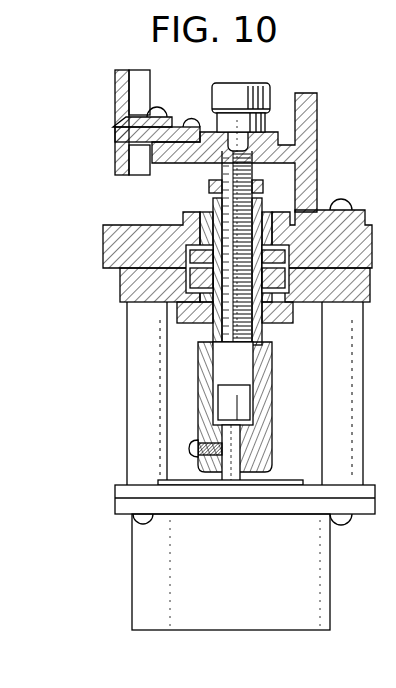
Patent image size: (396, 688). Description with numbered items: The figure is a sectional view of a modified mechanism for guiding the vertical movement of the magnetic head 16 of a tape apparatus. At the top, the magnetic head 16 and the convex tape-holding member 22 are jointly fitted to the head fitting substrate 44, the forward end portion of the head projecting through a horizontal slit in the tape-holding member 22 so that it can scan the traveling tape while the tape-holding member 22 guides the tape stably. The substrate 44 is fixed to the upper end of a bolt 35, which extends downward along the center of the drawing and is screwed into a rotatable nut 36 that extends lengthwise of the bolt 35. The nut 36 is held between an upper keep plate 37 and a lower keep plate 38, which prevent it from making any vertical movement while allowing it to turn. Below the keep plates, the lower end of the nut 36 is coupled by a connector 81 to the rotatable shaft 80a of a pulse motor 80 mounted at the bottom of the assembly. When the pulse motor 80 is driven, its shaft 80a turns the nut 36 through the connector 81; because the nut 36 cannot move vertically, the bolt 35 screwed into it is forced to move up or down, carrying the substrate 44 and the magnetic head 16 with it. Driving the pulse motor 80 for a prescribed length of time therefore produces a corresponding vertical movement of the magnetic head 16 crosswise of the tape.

The tape-holding member 22 is at (115, 83).
The magnetic head 16 is at (113, 127).
The head fitting substrate 44 is at (271, 133).
The upper keep plate 37 is at (199, 243).
The bolt 35 is at (215, 205).
The lower keep plate 38 is at (191, 322).
The rotatable nut 36 is at (260, 327).
The connector 81 is at (272, 426).
The rotatable shaft 80a is at (236, 447).
The pulse motor 80 is at (330, 576).